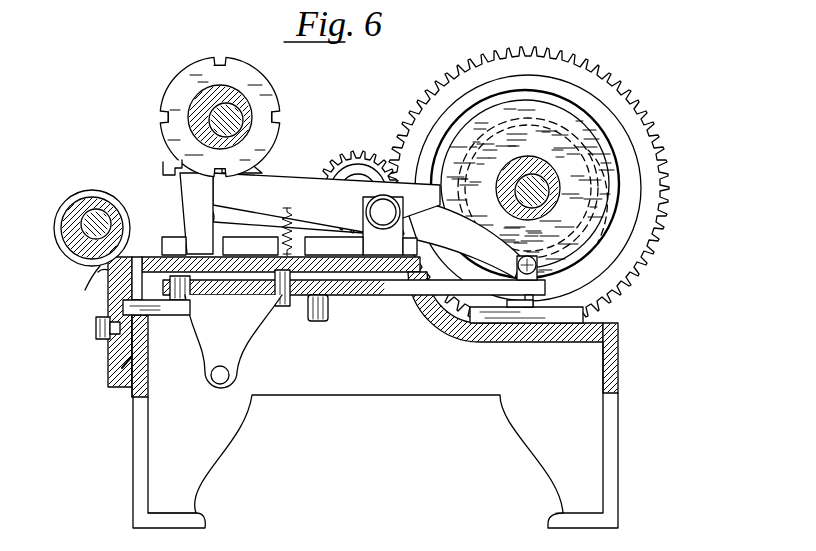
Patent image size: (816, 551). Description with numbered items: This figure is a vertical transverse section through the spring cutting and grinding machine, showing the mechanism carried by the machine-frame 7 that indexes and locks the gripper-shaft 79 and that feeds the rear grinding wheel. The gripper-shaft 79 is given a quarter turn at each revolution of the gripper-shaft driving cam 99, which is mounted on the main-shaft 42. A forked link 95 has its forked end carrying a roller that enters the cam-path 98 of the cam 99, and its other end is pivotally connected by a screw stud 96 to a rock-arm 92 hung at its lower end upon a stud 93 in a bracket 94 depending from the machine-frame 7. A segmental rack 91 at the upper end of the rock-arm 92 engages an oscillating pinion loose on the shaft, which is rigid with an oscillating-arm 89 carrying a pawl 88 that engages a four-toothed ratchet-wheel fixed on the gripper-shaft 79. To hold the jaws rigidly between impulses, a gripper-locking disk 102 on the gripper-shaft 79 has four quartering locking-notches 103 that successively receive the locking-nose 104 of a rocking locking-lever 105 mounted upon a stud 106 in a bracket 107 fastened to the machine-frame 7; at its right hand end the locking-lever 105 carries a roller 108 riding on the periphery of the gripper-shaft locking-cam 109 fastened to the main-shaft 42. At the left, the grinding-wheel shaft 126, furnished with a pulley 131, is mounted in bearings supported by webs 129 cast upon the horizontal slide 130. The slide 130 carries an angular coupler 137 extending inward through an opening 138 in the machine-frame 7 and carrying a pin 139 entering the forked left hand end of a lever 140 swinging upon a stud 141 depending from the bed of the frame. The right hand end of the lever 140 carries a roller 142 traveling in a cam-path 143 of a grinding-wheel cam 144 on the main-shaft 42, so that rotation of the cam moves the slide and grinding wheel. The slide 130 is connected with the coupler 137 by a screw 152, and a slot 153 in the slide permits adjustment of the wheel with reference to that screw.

The machine-frame 7 is at (372, 384).
The main-shaft 42 is at (542, 192).
The gripper-shaft 79 is at (210, 106).
The pawl 88 is at (243, 550).
The oscillating-arm 89 is at (429, 532).
The segmental rack 91 is at (162, 165).
The rock-arm 92 is at (186, 202).
The stud 93 is at (230, 373).
The bracket 94 is at (246, 334).
The forked link 95 is at (215, 217).
The screw stud 96 is at (195, 218).
The cam-path 98 is at (474, 82).
The gripper-shaft driving cam 99 is at (548, 76).
The gripper-locking disk 102 is at (193, 66).
The locking-notches 103 is at (220, 58).
The locking-nose 104 is at (252, 178).
The locking-lever 105 is at (326, 203).
The stud 106 is at (360, 176).
The bracket 107 is at (361, 225).
The roller 108 is at (560, 262).
The gripper-shaft locking-cam 109 is at (640, 212).
The shaft 126 is at (58, 214).
The webs 129 is at (106, 262).
The horizontal slide 130 is at (107, 270).
The pulley 131 is at (88, 206).
The angular coupler 137 is at (150, 315).
The opening 138 is at (142, 320).
The pin 139 is at (185, 290).
The lever 140 is at (372, 273).
The stud 141 is at (284, 306).
The roller 142 is at (452, 312).
The cam-path 143 is at (548, 290).
The grinding-wheel cam 144 is at (614, 262).
The screw 152 is at (100, 332).
The slot 153 is at (123, 360).